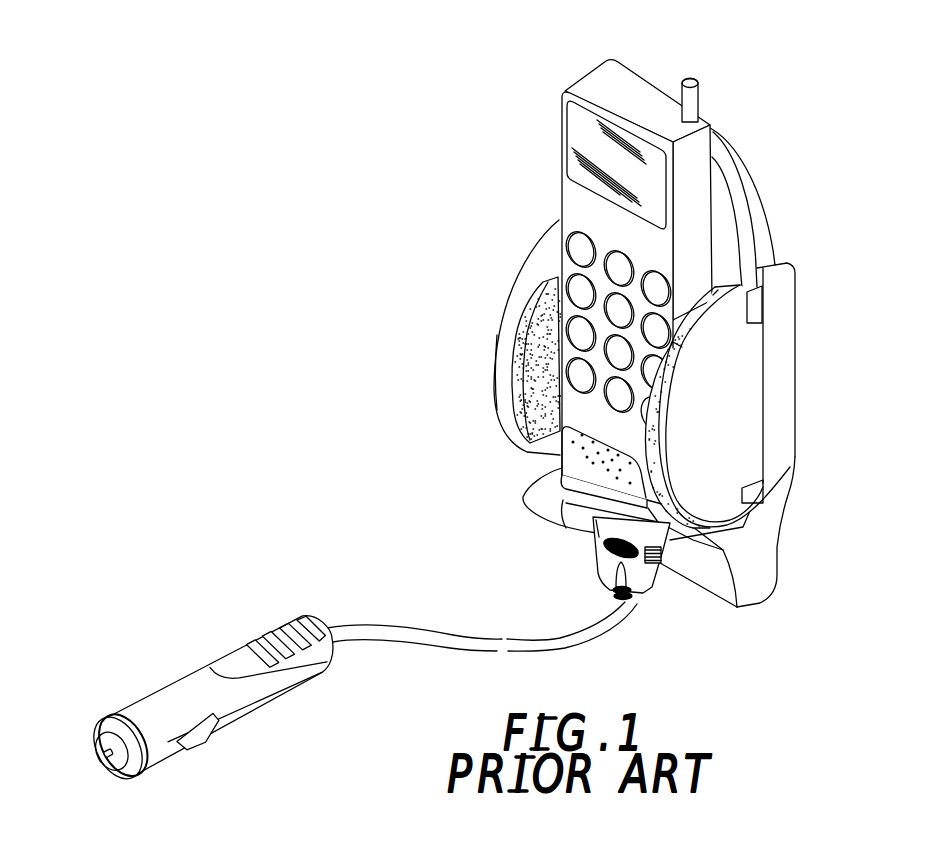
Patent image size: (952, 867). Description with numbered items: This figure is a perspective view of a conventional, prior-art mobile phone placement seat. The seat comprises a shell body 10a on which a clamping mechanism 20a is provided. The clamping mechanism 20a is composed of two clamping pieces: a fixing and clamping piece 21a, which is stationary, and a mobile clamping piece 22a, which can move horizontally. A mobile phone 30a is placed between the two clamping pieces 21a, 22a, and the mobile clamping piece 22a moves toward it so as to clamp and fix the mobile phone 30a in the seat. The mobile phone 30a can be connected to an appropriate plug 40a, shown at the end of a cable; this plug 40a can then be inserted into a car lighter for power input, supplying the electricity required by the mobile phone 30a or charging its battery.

The shell body 10a is at (750, 160).
The clamping mechanism 20a is at (812, 304).
The fixing and clamping piece 21a is at (513, 328).
The mobile clamping piece 22a is at (740, 365).
The mobile phone 30a is at (612, 77).
The plug 40a is at (287, 690).